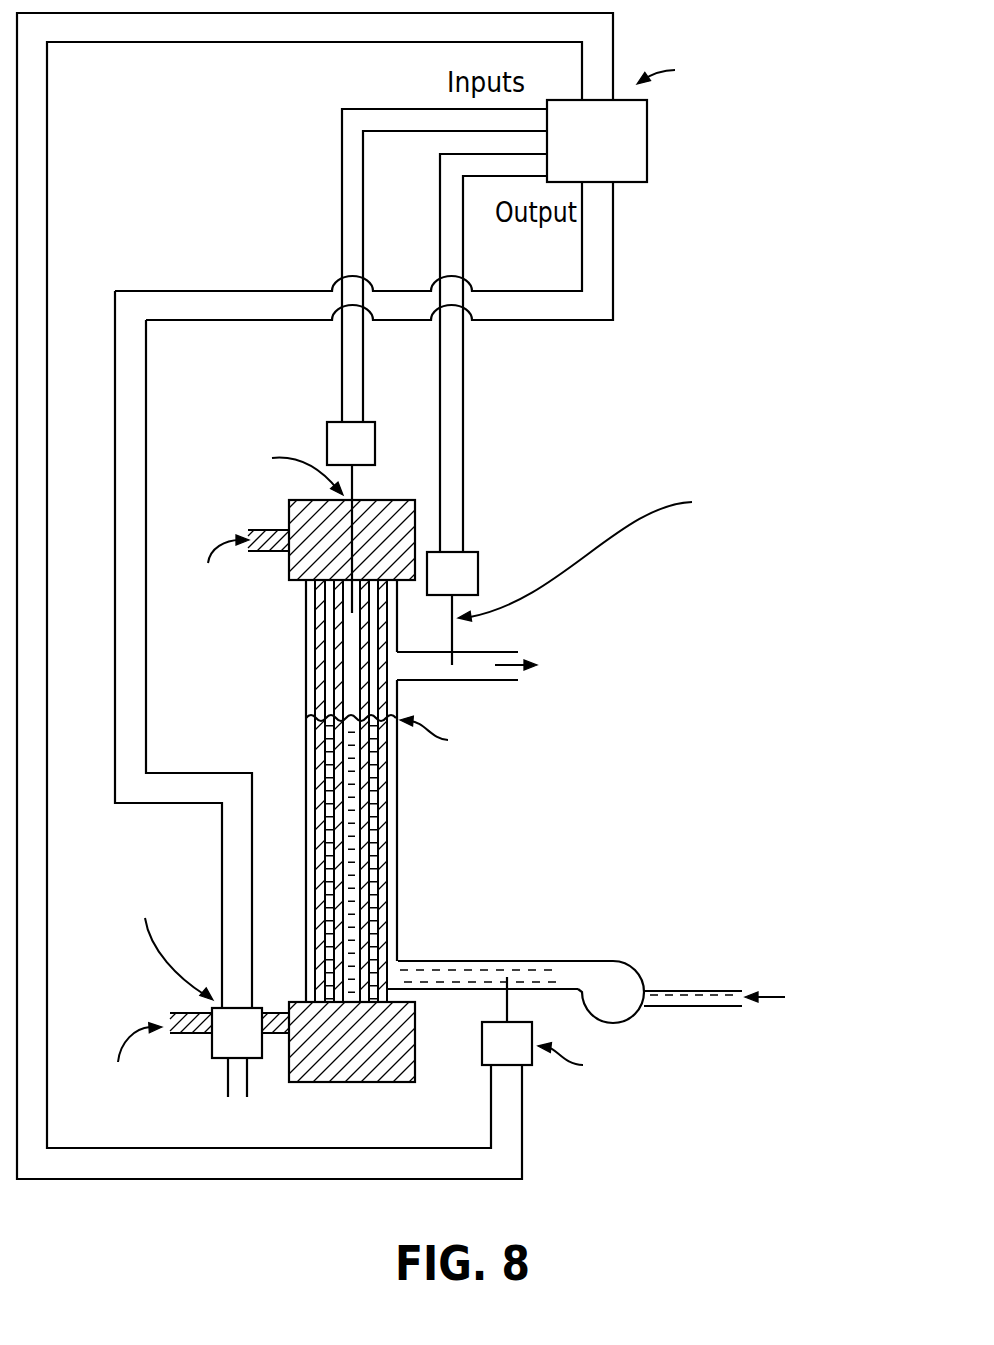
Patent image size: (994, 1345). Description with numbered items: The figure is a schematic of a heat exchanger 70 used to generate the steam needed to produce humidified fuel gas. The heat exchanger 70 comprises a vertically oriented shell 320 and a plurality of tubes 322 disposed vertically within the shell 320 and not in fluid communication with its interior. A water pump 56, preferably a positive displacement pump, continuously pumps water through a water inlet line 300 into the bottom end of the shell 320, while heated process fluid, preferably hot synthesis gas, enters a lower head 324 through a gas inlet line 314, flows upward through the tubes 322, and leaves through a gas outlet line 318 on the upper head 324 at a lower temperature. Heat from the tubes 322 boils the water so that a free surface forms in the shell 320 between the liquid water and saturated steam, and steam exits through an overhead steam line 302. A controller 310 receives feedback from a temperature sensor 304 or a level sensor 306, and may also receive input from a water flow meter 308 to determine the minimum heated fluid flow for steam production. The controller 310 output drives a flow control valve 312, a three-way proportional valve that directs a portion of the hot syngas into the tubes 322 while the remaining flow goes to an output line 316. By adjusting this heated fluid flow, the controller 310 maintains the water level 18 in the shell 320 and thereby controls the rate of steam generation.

The controller 310 is at (648, 143).
The level sensor 306 is at (333, 420).
The head 324 is at (385, 499).
The gas outlet line 318 is at (264, 530).
The temperature sensor 304 is at (478, 570).
The tubes 322 is at (338, 616).
The heat exchanger 70 is at (292, 687).
The shell 320 is at (302, 866).
The overhead steam line 302 is at (505, 680).
The water level 18 is at (350, 716).
The water inlet line 300 is at (446, 960).
The water pump 56 is at (637, 970).
The gas inlet line 314 is at (187, 1012).
The flow control valve 312 is at (212, 1048).
The output line 316 is at (248, 1078).
The water flow meter 308 is at (481, 1048).